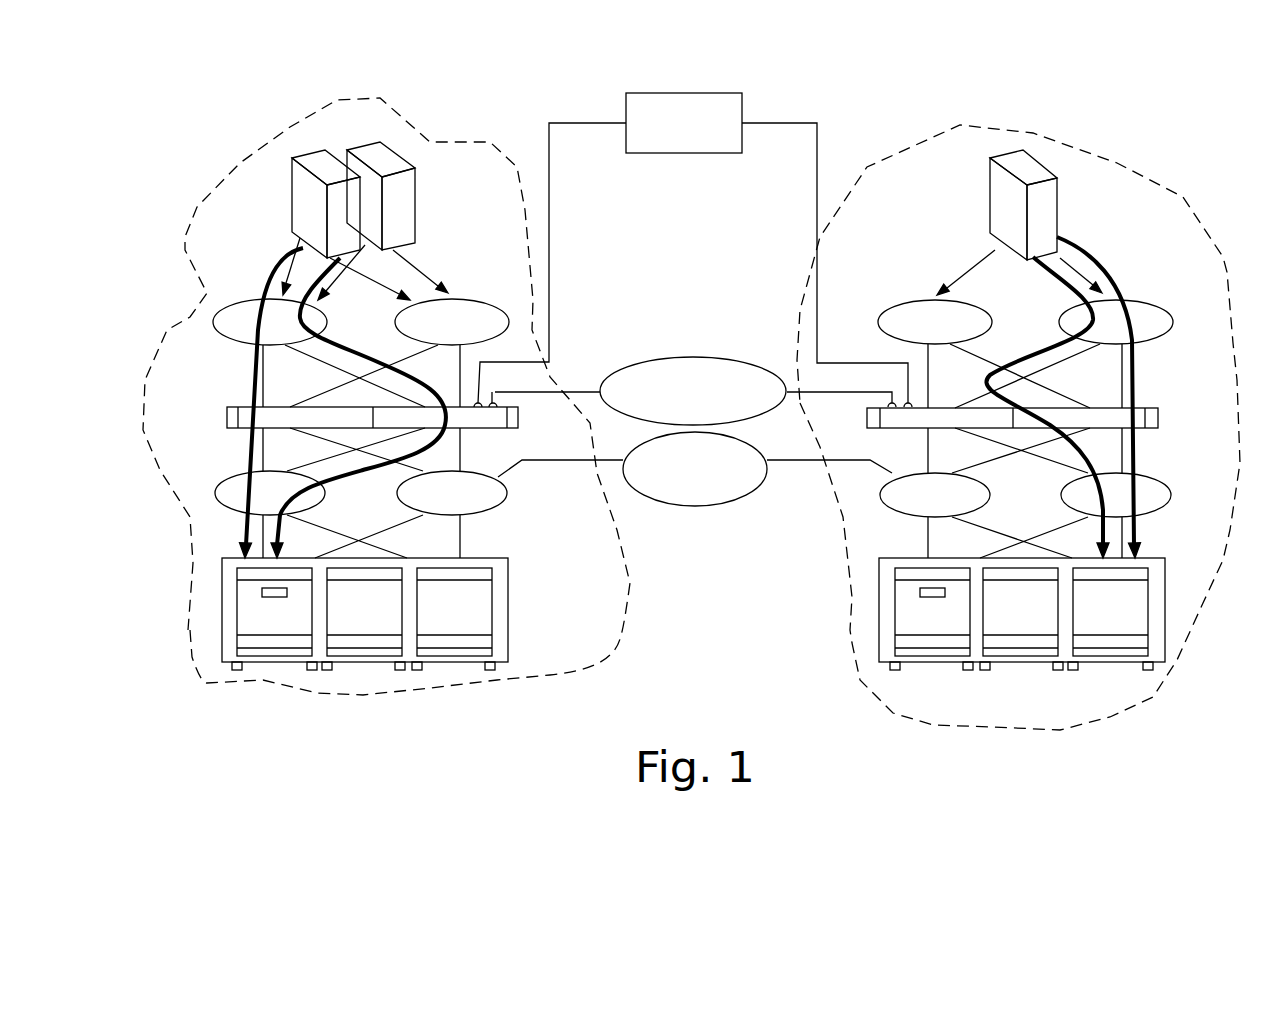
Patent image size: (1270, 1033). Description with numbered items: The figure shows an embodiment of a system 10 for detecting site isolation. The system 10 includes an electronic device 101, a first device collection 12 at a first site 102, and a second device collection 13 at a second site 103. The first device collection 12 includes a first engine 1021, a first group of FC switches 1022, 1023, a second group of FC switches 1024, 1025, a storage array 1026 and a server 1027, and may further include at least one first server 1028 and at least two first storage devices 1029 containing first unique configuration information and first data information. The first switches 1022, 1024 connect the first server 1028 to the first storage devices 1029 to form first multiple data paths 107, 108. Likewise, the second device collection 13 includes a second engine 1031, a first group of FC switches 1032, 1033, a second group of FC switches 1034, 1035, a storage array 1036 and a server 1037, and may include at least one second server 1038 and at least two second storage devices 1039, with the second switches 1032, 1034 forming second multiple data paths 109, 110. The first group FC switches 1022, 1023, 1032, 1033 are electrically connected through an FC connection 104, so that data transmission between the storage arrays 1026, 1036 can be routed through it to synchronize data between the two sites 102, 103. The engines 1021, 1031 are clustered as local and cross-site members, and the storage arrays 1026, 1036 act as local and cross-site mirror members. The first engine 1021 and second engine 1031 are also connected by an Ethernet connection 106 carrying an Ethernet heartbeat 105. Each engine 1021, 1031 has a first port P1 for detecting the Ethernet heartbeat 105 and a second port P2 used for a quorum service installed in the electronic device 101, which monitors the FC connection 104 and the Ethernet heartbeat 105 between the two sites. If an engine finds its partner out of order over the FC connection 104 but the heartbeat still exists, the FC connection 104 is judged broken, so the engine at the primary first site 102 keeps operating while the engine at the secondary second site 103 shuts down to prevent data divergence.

The system for detecting site isolation 10 is at (707, 705).
The first device collection 12 is at (353, 100).
The second device collection 13 is at (1142, 172).
The electronic device 101 is at (742, 100).
The first site 102 is at (175, 284).
The second site 103 is at (1229, 261).
The FC connection 104 is at (688, 505).
The Ethernet heartbeat 105 is at (693, 357).
The Ethernet connection 106 is at (563, 392).
The first data path 107 is at (250, 365).
The first data path 108 is at (327, 343).
The second data path 109 is at (1110, 277).
The second data path 110 is at (1053, 343).
The first port P1 is at (505, 408).
The second port P2 is at (480, 362).
The first engine 1021 is at (227, 418).
The first group FC switch 1022 is at (227, 478).
The first group FC switch 1023 is at (493, 512).
The second group FC switch 1024 is at (250, 299).
The second group FC switch 1025 is at (463, 299).
The storage array 1026 is at (508, 620).
The server 1027 is at (303, 158).
The first server 1028 is at (366, 124).
The first storage devices 1029 is at (313, 681).
The second engine 1031 is at (1158, 412).
The first group FC switch 1032 is at (1137, 473).
The first group FC switch 1033 is at (880, 512).
The second group FC switch 1034 is at (1140, 300).
The second group FC switch 1035 is at (917, 300).
The storage array 1036 is at (879, 618).
The server 1037 is at (1040, 160).
The second server 1038 is at (1003, 139).
The second storage devices 1039 is at (1131, 694).